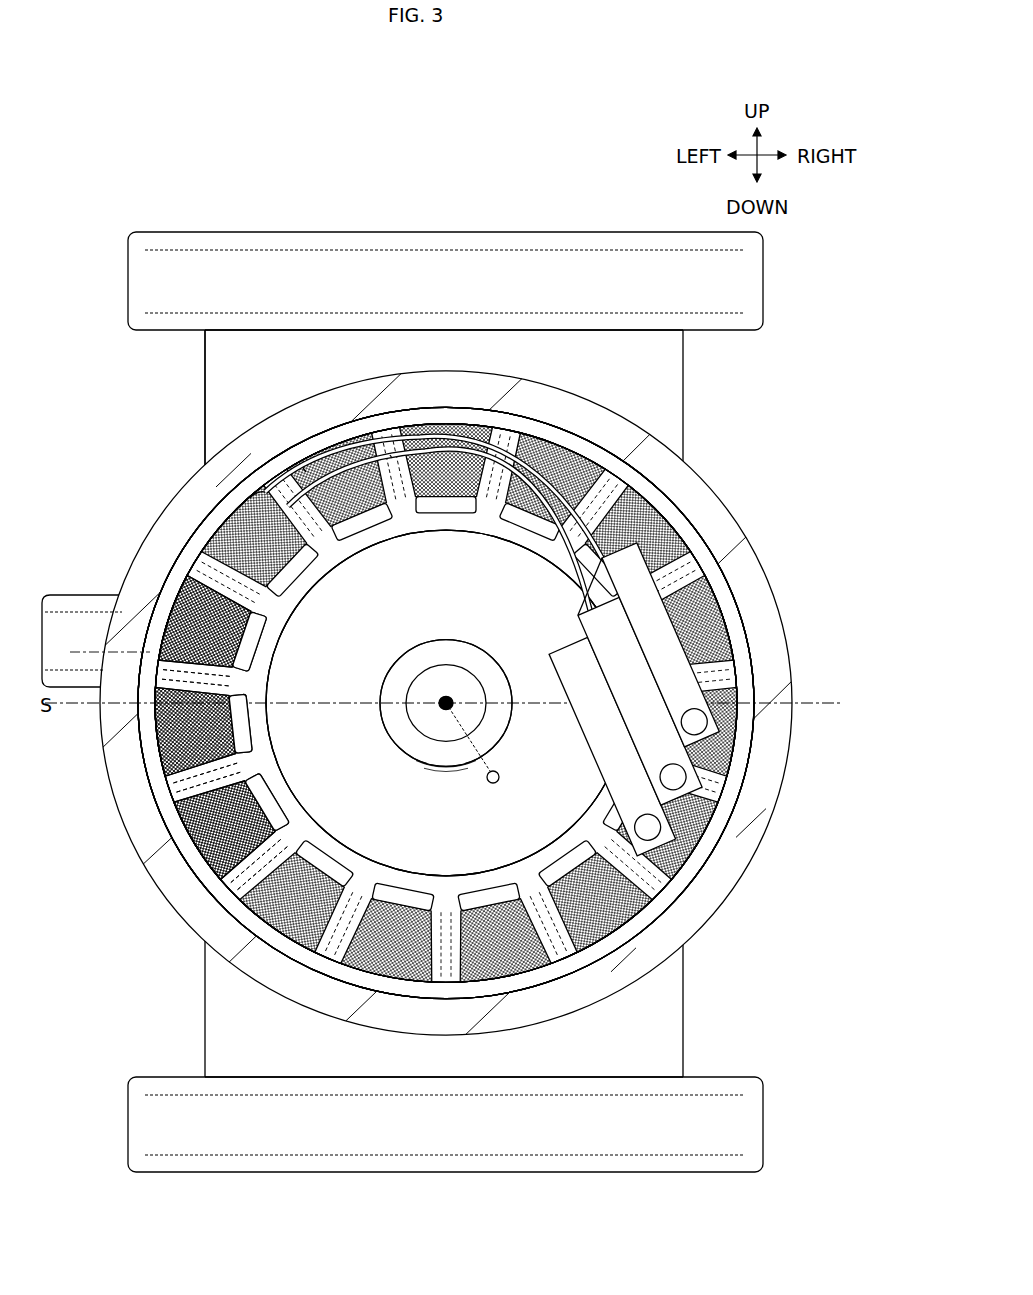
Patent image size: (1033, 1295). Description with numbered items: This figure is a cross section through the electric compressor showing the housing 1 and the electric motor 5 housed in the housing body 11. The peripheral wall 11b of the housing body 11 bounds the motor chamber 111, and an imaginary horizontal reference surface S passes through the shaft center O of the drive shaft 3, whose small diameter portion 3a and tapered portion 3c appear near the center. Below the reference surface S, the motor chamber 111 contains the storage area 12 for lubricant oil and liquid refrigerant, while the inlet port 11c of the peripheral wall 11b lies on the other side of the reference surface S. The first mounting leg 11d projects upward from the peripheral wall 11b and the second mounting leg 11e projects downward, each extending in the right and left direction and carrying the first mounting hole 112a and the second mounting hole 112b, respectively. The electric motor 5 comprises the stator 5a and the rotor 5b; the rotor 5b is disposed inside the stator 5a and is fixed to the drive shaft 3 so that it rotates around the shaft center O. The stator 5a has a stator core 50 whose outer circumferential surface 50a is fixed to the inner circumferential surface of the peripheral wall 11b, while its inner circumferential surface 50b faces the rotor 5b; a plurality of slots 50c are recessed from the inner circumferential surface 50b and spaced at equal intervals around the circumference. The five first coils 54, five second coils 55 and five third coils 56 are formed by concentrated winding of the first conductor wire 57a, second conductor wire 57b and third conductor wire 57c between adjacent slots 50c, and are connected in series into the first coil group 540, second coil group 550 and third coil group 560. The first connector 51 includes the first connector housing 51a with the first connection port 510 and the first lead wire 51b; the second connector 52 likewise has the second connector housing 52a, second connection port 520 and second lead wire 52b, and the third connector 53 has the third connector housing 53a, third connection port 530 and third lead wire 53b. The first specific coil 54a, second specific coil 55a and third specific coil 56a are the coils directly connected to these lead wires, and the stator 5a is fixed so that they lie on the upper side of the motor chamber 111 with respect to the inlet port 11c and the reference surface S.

The housing 1 is at (597, 152).
The drive shaft 3 is at (396, 688).
The small diameter portion 3a is at (420, 735).
The tapered portion 3c is at (396, 743).
The electric motor 5 is at (62, 783).
The stator 5a is at (138, 775).
The rotor 5b is at (282, 766).
The housing body 11 is at (712, 478).
The peripheral wall 11b is at (470, 420).
The inlet port 11c is at (84, 622).
The first mounting leg 11d is at (205, 352).
The second mounting leg 11e is at (687, 1050).
The motor chamber 111 is at (232, 975).
The first mounting hole 112a is at (152, 268).
The second mounting hole 112b is at (705, 1138).
The storage area 12 is at (452, 742).
The stator core 50 is at (273, 458).
The outer circumferential surface 50a is at (302, 460).
The inner circumferential surface 50b is at (440, 876).
The slot 50c is at (238, 492).
The first connector 51 is at (760, 688).
The first connector housing 51a is at (746, 700).
The first lead wire 51b is at (654, 468).
The first connection port 510 is at (736, 740).
The second connection port 520 is at (720, 790).
The third connection port 530 is at (692, 880).
The second connector 52 is at (660, 645).
The second connector housing 52a is at (668, 672).
The second lead wire 52b is at (392, 456).
The third connector 53 is at (640, 701).
The third connector housing 53a is at (612, 746).
The third lead wire 53b is at (304, 470).
The first coil 54 is at (252, 651).
The first specific coil 54a is at (446, 511).
The first coil group 540 is at (459, 777).
The second coil 55 is at (252, 722).
The second specific coil 55a is at (363, 527).
The second coil group 550 is at (497, 791).
The third coil 56 is at (272, 795).
The third specific coil 56a is at (302, 576).
The third coil group 560 is at (507, 827).
The first conductor wire 57a is at (500, 436).
The second conductor wire 57b is at (382, 450).
The third conductor wire 57c is at (262, 492).